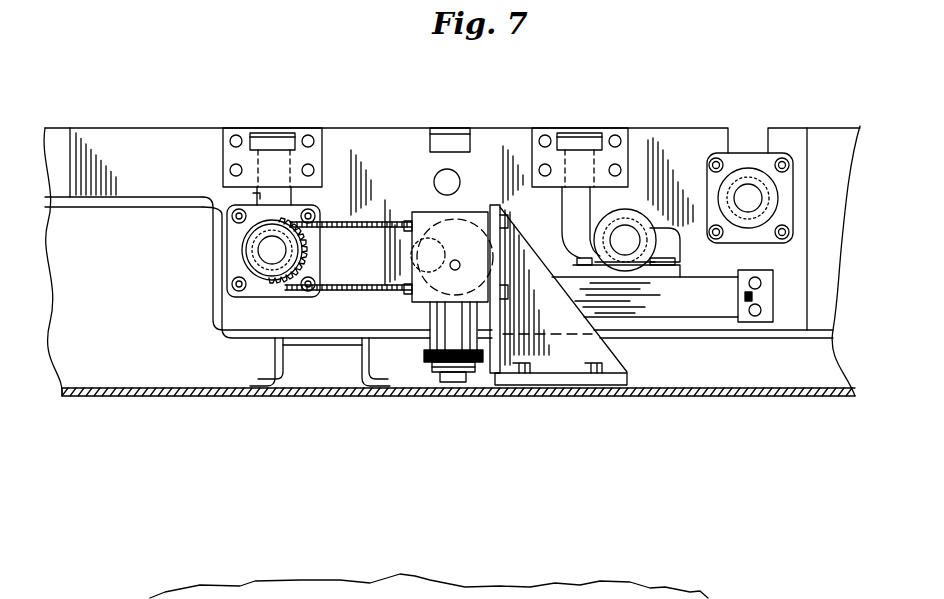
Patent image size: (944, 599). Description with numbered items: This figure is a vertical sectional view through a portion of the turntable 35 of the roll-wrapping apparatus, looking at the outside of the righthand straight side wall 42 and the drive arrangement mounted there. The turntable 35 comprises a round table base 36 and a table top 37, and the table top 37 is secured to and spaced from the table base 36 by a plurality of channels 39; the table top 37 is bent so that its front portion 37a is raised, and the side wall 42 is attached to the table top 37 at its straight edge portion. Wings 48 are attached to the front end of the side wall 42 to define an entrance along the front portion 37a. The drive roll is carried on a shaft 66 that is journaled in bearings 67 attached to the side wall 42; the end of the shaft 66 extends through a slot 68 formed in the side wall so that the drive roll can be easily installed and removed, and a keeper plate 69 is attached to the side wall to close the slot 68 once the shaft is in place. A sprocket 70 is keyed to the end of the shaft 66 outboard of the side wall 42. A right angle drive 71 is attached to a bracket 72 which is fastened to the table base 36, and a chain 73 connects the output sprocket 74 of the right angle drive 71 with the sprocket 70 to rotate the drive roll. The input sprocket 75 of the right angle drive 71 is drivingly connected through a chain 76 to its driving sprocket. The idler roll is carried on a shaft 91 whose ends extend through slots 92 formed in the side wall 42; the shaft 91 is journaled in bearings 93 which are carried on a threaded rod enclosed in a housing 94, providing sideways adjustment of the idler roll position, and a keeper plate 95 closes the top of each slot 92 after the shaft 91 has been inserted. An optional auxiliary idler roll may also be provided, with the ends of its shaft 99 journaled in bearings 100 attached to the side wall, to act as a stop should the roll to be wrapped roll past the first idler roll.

The turntable 35 is at (722, 397).
The table base 36 is at (478, 392).
The table top 37 is at (213, 310).
The front portion 37a is at (127, 197).
The channels 39 is at (275, 370).
The side wall 42 is at (398, 128).
The wings 48 is at (182, 132).
The shaft 66 is at (268, 250).
The bearings 67 is at (240, 263).
The slot 68 is at (256, 196).
The keeper plate 69 is at (313, 128).
The sprocket 70 is at (296, 256).
The right angle drive 71 is at (447, 251).
The bracket 72 is at (526, 302).
The chain 73 is at (390, 224).
The output sprocket 74 is at (414, 264).
The input sprocket 75 is at (432, 366).
The chain 76 is at (424, 354).
The shaft 91 is at (626, 248).
The slots 92 is at (568, 211).
The bearings 93 is at (625, 225).
The housing 94 is at (703, 277).
The keeper plate 95 is at (585, 128).
The shaft 99 is at (752, 198).
The bearings 100 is at (751, 153).